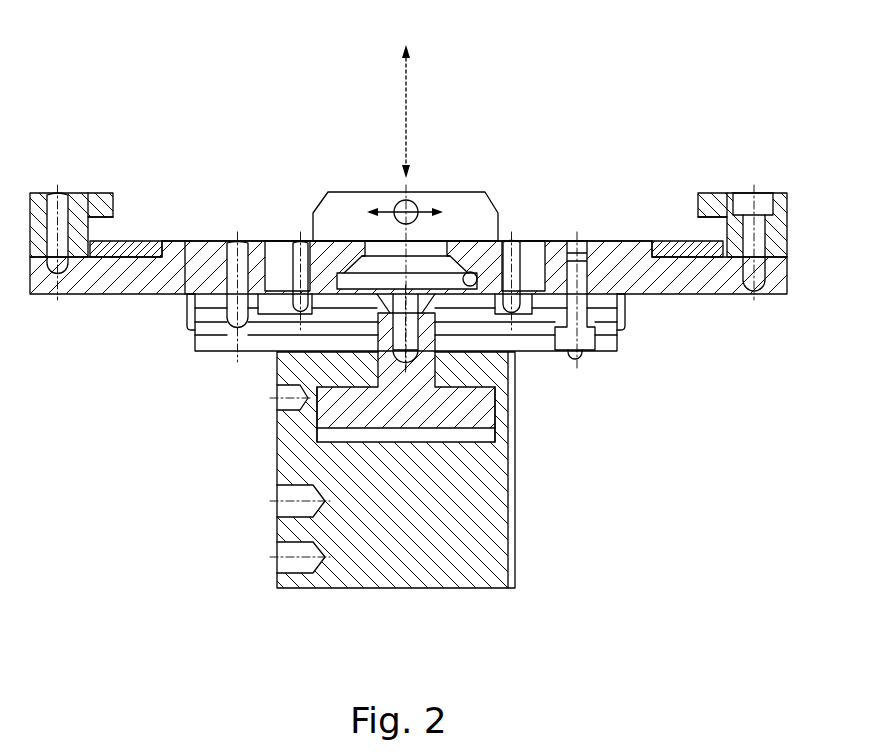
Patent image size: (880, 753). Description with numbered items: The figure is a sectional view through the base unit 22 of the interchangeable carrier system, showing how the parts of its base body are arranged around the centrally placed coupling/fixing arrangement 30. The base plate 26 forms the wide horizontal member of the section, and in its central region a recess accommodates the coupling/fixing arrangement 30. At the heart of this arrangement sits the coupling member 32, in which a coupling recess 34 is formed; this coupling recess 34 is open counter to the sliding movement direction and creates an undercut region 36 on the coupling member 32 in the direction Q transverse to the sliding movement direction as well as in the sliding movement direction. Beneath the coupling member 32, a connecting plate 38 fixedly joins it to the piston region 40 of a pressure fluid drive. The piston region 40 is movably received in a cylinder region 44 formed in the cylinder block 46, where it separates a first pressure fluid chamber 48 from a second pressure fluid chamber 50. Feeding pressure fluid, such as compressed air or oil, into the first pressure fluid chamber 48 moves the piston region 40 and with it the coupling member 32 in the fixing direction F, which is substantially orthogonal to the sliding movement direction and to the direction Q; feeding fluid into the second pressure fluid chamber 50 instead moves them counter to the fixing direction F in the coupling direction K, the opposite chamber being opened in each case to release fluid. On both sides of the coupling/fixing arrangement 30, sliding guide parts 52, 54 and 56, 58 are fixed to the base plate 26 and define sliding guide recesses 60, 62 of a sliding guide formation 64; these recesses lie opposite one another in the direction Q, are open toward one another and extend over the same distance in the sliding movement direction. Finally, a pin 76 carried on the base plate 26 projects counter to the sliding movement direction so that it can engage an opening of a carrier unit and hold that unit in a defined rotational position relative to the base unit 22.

The base unit 22 is at (621, 87).
The base plate 26 is at (128, 285).
The coupling/fixing arrangement 30 is at (259, 210).
The coupling member 32 is at (282, 228).
The coupling recess 34 is at (482, 268).
The undercut region 36 is at (478, 276).
The connecting plate 38 is at (283, 295).
The piston region 40 is at (327, 415).
The cylinder region 44 is at (495, 415).
The cylinder block 46 is at (495, 537).
The first pressure fluid chamber 48 is at (483, 392).
The second pressure fluid chamber 50 is at (485, 437).
The sliding guide part 52 is at (37, 190).
The sliding guide part 54 is at (150, 230).
The sliding guide part 56 is at (787, 240).
The sliding guide part 58 is at (675, 258).
The sliding guide recess 60 is at (116, 219).
The sliding guide recess 62 is at (705, 227).
The sliding guide formation 64 is at (739, 168).
The pin 76 is at (398, 200).
The coupling direction K is at (408, 72).
The fixing direction F is at (408, 145).
The direction Q is at (423, 270).